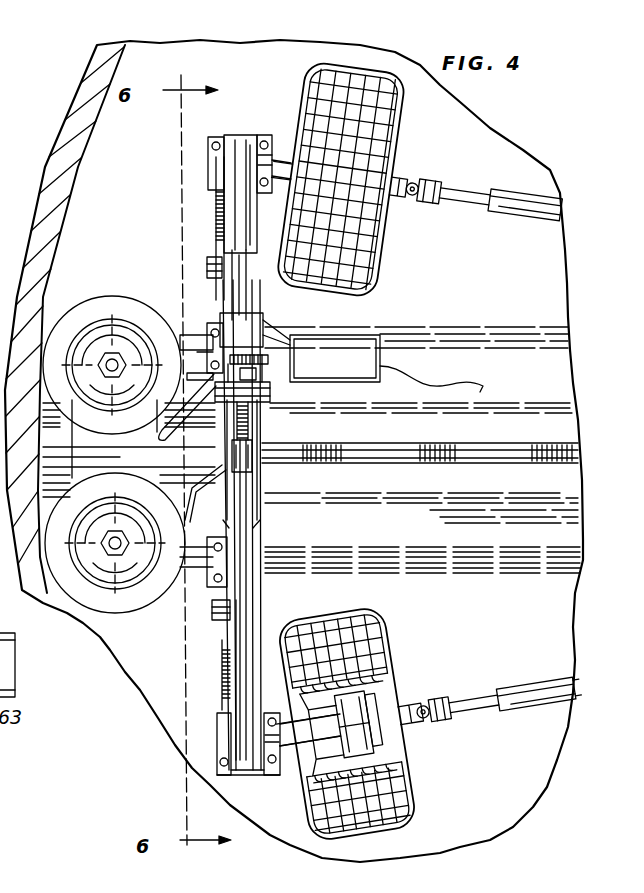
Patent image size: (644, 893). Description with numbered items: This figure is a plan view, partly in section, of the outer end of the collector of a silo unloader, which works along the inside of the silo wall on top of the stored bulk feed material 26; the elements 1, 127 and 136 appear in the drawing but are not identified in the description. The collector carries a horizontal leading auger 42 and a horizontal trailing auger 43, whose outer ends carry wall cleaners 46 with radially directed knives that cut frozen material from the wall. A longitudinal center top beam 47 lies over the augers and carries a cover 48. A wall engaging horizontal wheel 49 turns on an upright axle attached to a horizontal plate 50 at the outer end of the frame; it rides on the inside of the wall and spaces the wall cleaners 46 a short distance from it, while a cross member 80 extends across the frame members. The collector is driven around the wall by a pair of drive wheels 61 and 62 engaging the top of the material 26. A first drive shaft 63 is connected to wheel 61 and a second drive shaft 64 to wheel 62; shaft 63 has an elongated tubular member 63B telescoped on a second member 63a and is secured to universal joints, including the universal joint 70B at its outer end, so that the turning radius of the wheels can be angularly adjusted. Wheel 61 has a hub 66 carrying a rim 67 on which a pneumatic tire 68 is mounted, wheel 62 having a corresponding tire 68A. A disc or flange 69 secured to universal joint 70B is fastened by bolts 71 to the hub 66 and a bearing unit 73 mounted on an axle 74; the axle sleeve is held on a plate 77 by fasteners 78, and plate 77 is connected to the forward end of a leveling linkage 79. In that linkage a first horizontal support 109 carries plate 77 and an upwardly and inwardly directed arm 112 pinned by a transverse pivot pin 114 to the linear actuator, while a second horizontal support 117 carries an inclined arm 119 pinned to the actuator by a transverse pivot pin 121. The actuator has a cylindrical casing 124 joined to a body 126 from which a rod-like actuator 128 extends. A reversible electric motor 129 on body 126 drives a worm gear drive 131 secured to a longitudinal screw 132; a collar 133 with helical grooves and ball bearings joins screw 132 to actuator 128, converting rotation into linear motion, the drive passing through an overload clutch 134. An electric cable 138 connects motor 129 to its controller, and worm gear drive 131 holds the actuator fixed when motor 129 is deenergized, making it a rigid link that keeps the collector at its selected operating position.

The vehicle body 1 is at (45, 167).
The bulk feed materials 26 is at (538, 313).
The horizontal leading auger 42 is at (197, 485).
The horizontal trailing auger 43 is at (167, 435).
The wall cleaners 46 is at (58, 477).
The longitudinal center top beam 47 is at (447, 445).
The cover 48 is at (562, 503).
The wall engaging horizontal wheel 49 is at (100, 300).
The horizontal plate 50 is at (100, 450).
The drive wheel 61 is at (482, 727).
The drive wheel 62 is at (416, 189).
The first drive shaft 63 is at (512, 697).
The second member 63a is at (475, 678).
The first elongated tubular member 63B is at (600, 689).
The second drive shaft 64 is at (527, 189).
The hub 66 is at (373, 698).
The rim 67 is at (451, 707).
The pneumatic tire 68 is at (347, 645).
The pneumatic tire 68A is at (341, 179).
The disc or flange 69 is at (376, 712).
The universal joint 70B is at (457, 727).
The bolts 71 is at (413, 727).
The bearing unit 73 is at (391, 718).
The axle 74 is at (293, 778).
The plate 77 is at (225, 752).
The fasteners 78 is at (235, 775).
The leveling linkage 79 is at (395, 488).
The cross member 80 is at (15, 658).
The first horizontal support 109 is at (243, 687).
The upwardly and inwardly directed arm 112 is at (226, 650).
The transverse pivot pin 114 is at (212, 612).
The second horizontal support 117 is at (237, 140).
The inclined arm 119 is at (222, 235).
The transverse pivot pin 121 is at (208, 268).
The cylindrical casing 124 is at (264, 498).
The body 126 is at (265, 330).
The rod 127 is at (238, 302).
The rod-like actuator 128 is at (247, 562).
The reversible electric motor 129 is at (360, 338).
The worm gear drive 131 is at (335, 358).
The longitudinal screw 132 is at (250, 433).
The collar 133 is at (255, 455).
The clutch 134 is at (270, 368).
The gear bracket 136 is at (268, 390).
The electric cable 138 is at (455, 380).